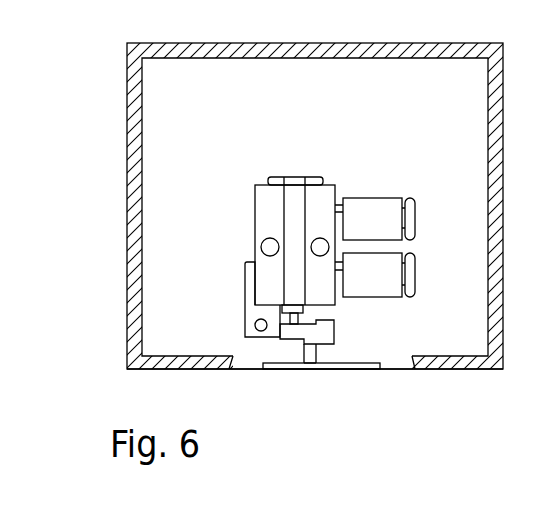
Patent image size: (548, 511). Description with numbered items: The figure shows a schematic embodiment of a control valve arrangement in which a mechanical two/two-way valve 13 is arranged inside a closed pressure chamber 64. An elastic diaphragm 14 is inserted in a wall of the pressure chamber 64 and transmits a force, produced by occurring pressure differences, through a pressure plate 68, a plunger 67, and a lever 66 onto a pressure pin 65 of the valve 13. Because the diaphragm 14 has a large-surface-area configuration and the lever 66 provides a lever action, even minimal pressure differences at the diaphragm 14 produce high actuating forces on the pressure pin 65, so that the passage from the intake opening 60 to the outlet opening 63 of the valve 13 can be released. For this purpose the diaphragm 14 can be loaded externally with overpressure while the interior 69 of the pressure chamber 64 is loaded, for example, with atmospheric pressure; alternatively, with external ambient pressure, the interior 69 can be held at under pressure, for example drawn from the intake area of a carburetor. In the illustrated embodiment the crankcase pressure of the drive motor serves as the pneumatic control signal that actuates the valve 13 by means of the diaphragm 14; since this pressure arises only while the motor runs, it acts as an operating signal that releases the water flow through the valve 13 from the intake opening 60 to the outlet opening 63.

The mechanical 2/2-way valve 13 is at (267, 208).
The elastic diaphragm 14 is at (395, 372).
The intake opening 60 is at (388, 205).
The outlet opening 63 is at (388, 288).
The pressure chamber 64 is at (132, 130).
The pressure pin 65 is at (298, 318).
The lever 66 is at (296, 324).
The plunger 67 is at (316, 354).
The pressure plate 68 is at (333, 365).
The interior 69 is at (377, 124).